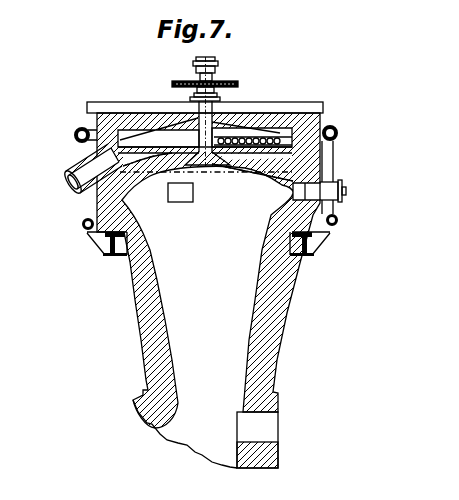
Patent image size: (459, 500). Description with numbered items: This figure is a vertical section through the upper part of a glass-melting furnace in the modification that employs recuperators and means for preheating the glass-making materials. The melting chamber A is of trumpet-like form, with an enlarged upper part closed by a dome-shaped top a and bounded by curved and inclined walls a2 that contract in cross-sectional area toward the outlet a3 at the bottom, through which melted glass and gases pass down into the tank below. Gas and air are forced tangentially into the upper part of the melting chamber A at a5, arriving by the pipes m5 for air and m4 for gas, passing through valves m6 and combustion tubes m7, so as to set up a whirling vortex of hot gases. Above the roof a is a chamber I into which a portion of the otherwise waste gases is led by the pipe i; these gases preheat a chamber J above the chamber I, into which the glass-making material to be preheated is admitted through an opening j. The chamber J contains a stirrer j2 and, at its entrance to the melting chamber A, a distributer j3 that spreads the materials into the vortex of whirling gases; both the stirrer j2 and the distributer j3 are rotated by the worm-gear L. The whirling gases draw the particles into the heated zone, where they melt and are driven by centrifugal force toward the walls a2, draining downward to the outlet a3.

The melting chamber A is at (208, 270).
The dome-shaped top a is at (142, 168).
The curved and inclined walls a2 is at (131, 210).
The outlet of melting chamber a3 is at (205, 434).
The tangential inlet a5 is at (180, 202).
The pipe i is at (83, 173).
The chamber I is at (132, 157).
The chamber J is at (148, 137).
The opening j is at (258, 118).
The stirrer j2 is at (237, 158).
The distributer j3 is at (208, 165).
The worm-gear L is at (220, 83).
The gas pipe m4 is at (82, 225).
The air pipe m5 is at (75, 136).
The valve m6 is at (347, 192).
The combustion tube m7 is at (318, 174).